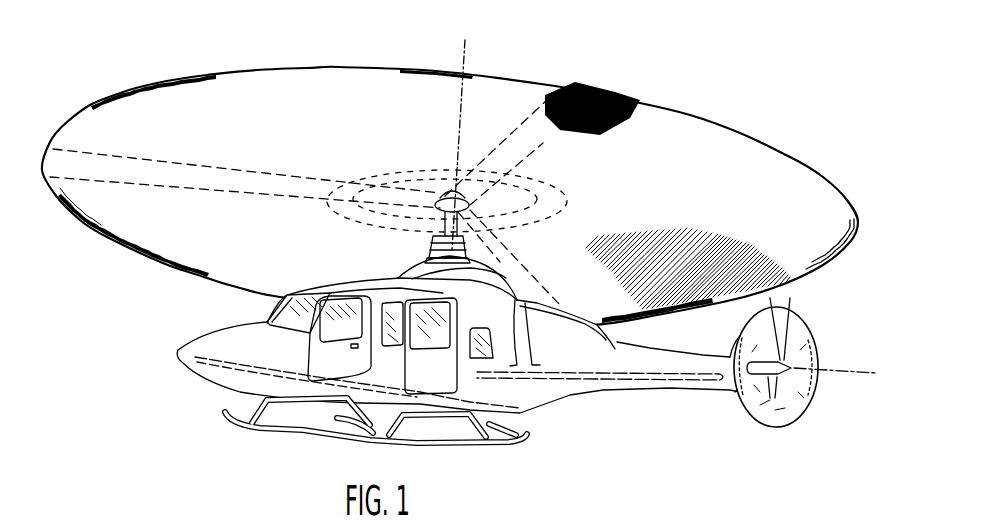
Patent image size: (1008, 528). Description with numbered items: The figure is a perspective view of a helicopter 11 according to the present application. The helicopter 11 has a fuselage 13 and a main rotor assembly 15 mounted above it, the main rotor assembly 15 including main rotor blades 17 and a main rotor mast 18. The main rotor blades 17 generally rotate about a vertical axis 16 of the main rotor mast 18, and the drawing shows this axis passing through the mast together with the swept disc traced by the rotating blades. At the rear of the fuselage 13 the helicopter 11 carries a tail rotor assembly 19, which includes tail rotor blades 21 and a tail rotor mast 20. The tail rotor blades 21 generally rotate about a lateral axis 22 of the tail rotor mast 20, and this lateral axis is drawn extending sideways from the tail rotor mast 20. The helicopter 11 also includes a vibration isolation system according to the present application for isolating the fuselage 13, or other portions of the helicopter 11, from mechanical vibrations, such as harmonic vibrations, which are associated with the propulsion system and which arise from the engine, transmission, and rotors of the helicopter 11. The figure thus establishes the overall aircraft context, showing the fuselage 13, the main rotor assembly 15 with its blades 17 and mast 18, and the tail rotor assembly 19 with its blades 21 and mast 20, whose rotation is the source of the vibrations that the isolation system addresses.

The helicopter 11 is at (640, 72).
The fuselage 13 is at (228, 378).
The main rotor assembly 15 is at (516, 246).
The vertical axis 16 is at (456, 137).
The main rotor blades 17 is at (198, 164).
The main rotor mast 18 is at (445, 213).
The tail rotor assembly 19 is at (790, 446).
The tail rotor mast 20 is at (762, 376).
The tail rotor blades 21 is at (795, 340).
The lateral axis 22 is at (836, 374).